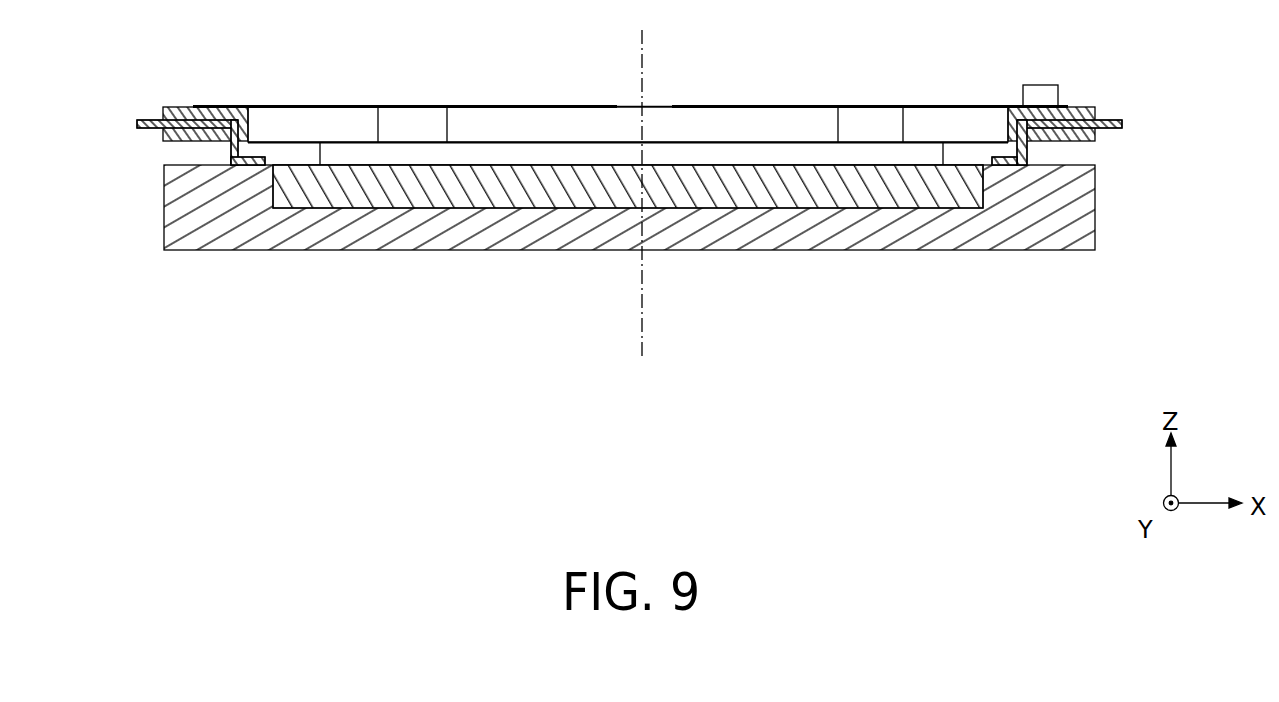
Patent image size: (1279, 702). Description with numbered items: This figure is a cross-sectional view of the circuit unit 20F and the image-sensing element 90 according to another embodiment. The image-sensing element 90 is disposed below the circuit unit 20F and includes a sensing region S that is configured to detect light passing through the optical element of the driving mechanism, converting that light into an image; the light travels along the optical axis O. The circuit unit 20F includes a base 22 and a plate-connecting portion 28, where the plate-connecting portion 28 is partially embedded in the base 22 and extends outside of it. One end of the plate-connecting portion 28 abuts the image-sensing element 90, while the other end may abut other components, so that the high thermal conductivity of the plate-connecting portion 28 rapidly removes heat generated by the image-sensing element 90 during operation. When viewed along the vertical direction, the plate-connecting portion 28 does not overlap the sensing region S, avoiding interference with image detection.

The circuit unit 20F is at (596, 98).
The base 22 is at (237, 107).
The plate-connecting portion 28 is at (232, 150).
The image-sensing element 90 is at (599, 149).
The sensing region S is at (470, 184).
The optical axis O is at (643, 181).